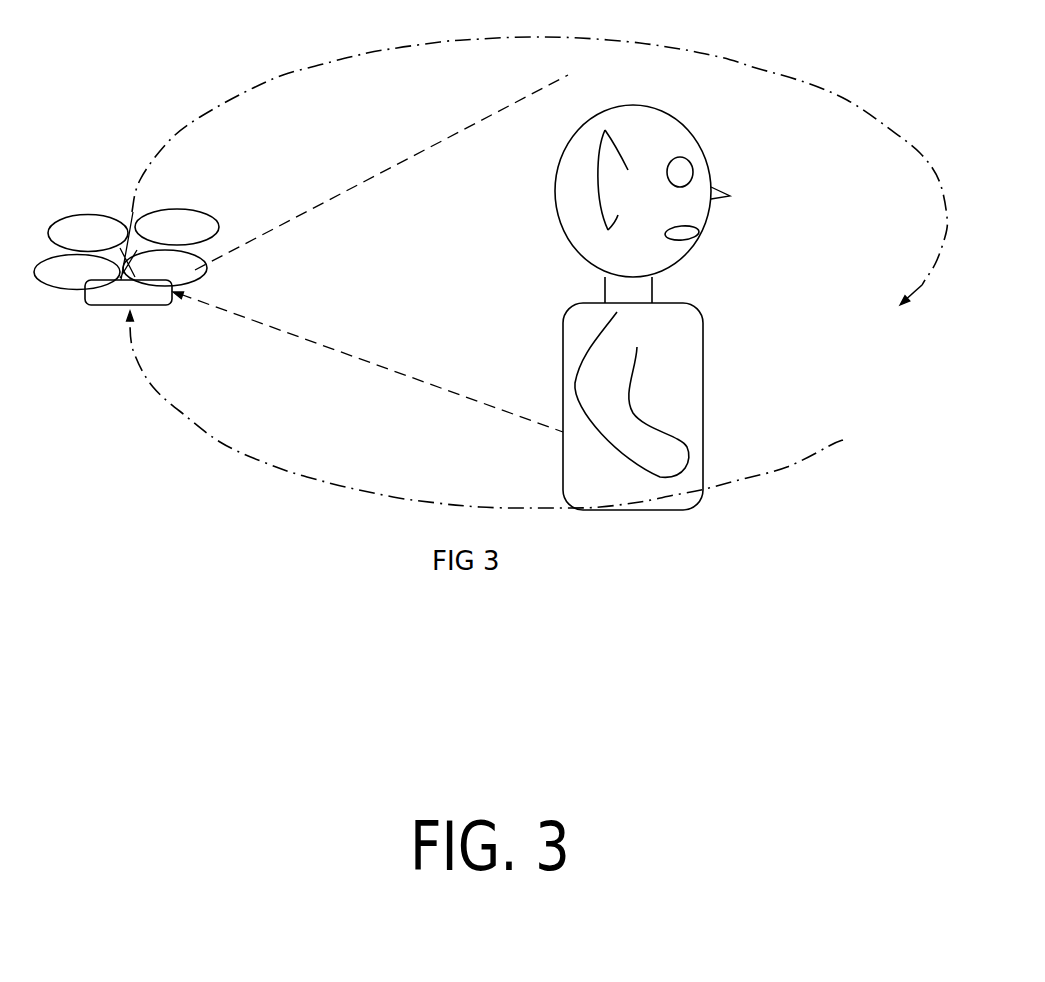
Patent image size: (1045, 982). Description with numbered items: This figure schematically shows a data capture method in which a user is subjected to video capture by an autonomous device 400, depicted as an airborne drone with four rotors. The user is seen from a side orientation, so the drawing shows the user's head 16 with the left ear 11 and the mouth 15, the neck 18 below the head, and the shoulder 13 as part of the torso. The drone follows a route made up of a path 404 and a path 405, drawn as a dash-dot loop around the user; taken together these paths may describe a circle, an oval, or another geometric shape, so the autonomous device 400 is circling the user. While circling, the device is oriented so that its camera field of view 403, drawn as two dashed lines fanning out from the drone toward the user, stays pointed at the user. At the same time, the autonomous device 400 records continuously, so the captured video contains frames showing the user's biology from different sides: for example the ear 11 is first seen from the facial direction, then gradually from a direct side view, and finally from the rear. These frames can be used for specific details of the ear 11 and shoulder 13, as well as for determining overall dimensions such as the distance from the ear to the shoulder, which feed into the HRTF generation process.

The ear 11 is at (592, 175).
The shoulder 13 is at (588, 350).
The mouth 15 is at (702, 240).
The head 16 is at (710, 165).
The neck 18 is at (655, 290).
The autonomous device 400 is at (60, 315).
The camera field of view 403 is at (395, 167).
The path 404 is at (207, 458).
The path 405 is at (240, 92).